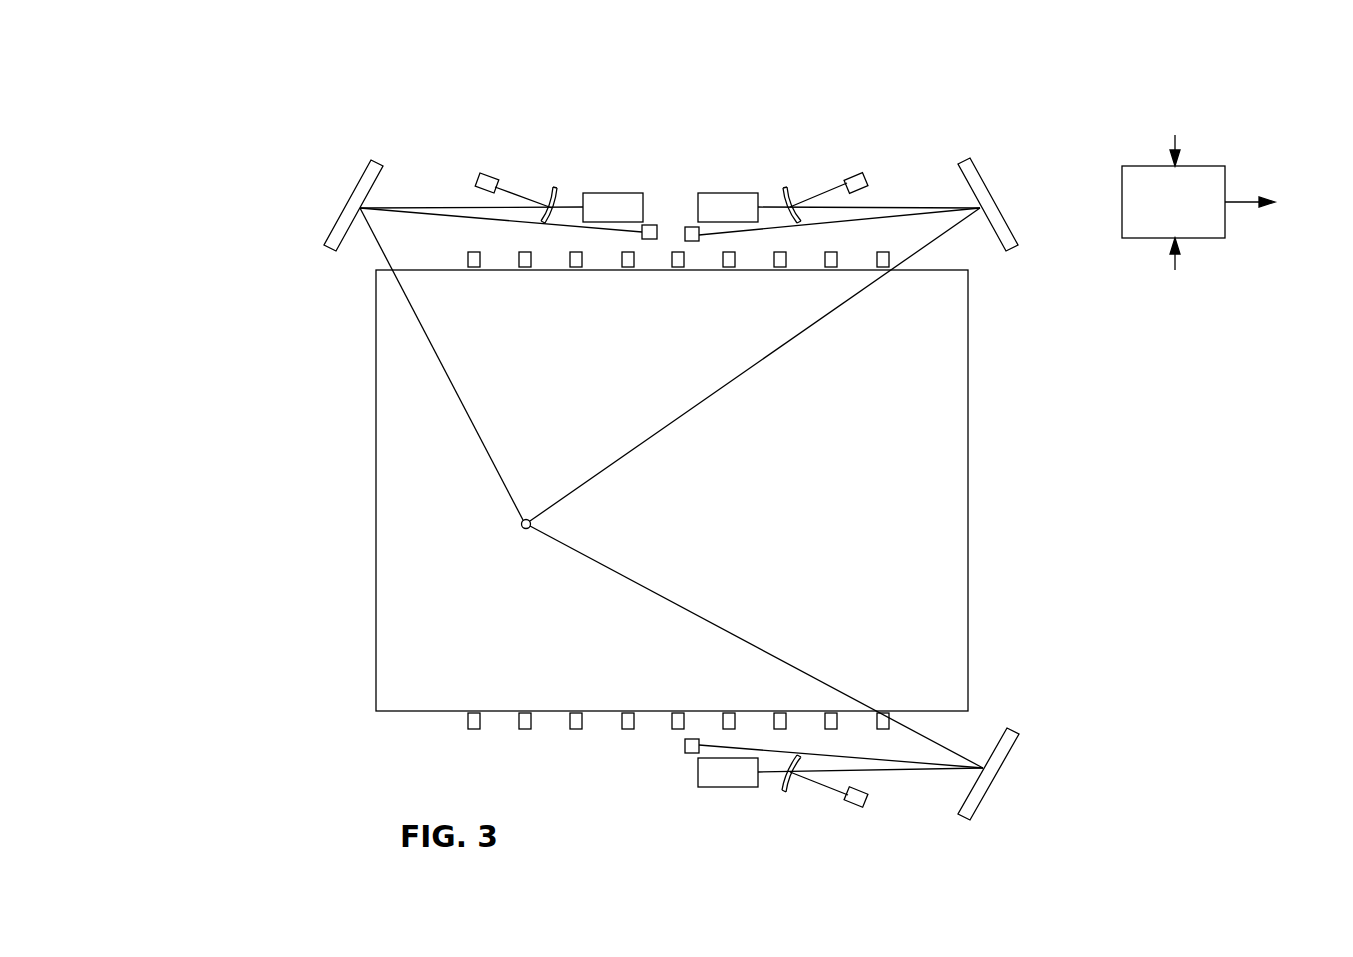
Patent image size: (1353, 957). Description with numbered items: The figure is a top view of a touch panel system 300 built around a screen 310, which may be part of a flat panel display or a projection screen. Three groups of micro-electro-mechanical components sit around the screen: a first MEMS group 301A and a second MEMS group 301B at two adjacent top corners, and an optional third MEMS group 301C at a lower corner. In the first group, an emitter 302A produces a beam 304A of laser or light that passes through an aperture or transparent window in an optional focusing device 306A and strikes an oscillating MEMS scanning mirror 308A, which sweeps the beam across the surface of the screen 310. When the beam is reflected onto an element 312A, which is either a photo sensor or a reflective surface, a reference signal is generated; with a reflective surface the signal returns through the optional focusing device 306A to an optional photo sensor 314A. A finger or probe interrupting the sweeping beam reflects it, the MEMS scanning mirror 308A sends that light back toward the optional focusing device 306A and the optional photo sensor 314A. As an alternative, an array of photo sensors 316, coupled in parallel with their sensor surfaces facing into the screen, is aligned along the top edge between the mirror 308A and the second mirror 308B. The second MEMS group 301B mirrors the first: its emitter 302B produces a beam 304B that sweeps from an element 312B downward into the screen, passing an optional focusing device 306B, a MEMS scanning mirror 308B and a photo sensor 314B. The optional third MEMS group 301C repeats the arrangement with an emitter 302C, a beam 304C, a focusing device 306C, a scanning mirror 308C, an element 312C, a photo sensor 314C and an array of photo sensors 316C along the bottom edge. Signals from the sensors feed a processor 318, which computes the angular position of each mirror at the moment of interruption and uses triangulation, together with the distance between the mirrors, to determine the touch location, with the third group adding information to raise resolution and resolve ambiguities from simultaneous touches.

The touch panel system 300 is at (262, 112).
The first micro-electro-mechanical system (MEMS) group 301A is at (351, 270).
The second MEMS group 301B is at (991, 270).
The optional third MEMS group 301C is at (990, 709).
The emitter 302A is at (605, 193).
The emitter 302B is at (737, 193).
The emitter 302C is at (737, 787).
The beam 304A is at (420, 207).
The beam 304B is at (922, 207).
The beam 304C is at (920, 770).
The optional focusing device 306A is at (558, 188).
The optional focusing device 306B is at (782, 188).
The optional focusing device 306C is at (782, 790).
The oscillating MEMS scanning mirror 308A is at (380, 160).
The MEMS scanning mirror 308B is at (963, 160).
The MEMS scanning mirror 308C is at (965, 818).
The screen 310 is at (968, 489).
The element 312A is at (648, 225).
The element 312B is at (692, 227).
The element 312C is at (693, 753).
The optional photo sensor 314A is at (492, 175).
The photo sensor 314B is at (853, 177).
The photo sensor 314C is at (853, 804).
The array of photo sensors 316 is at (467, 258).
The array of photo sensors 316C is at (467, 722).
The processor 318 is at (1225, 224).